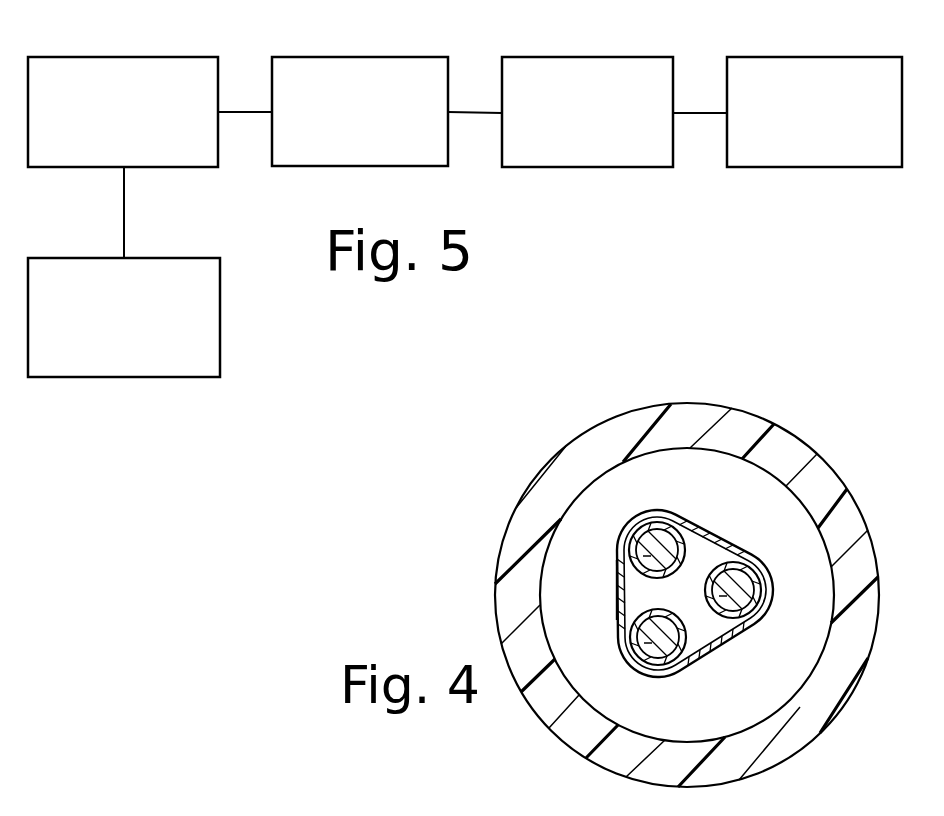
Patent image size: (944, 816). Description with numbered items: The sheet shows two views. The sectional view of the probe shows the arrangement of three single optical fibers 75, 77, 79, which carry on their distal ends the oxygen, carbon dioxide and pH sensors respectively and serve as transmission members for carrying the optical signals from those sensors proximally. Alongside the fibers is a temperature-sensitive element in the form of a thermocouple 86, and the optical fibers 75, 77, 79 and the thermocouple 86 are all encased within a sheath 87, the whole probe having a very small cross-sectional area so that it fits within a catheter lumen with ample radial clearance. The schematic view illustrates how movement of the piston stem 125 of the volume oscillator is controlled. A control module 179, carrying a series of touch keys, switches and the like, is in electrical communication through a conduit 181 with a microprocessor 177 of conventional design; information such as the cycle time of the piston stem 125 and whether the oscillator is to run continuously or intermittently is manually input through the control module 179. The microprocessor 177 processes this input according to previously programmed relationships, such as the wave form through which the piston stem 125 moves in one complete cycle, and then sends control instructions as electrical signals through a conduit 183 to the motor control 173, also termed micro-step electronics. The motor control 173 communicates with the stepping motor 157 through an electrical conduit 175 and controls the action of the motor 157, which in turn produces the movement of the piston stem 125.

In FIG. 4, the optical fiber 75 is at (653, 515).
In FIG. 4, the optical fiber 77 is at (757, 623).
In FIG. 4, the optical fiber 79 is at (630, 660).
In FIG. 4, the thermocouple 86 is at (718, 537).
In FIG. 4, the sheath 87 is at (617, 588).
In FIG. 5, the piston stem 125 is at (793, 168).
In FIG. 5, the stepping motor 157 is at (592, 168).
In FIG. 5, the motor control 173 is at (440, 57).
In FIG. 5, the electrical conduit 175 is at (472, 113).
In FIG. 5, the microprocessor 177 is at (138, 57).
In FIG. 5, the control module 179 is at (173, 378).
In FIG. 5, the conduit 181 is at (124, 240).
In FIG. 5, the conduit 183 is at (233, 112).